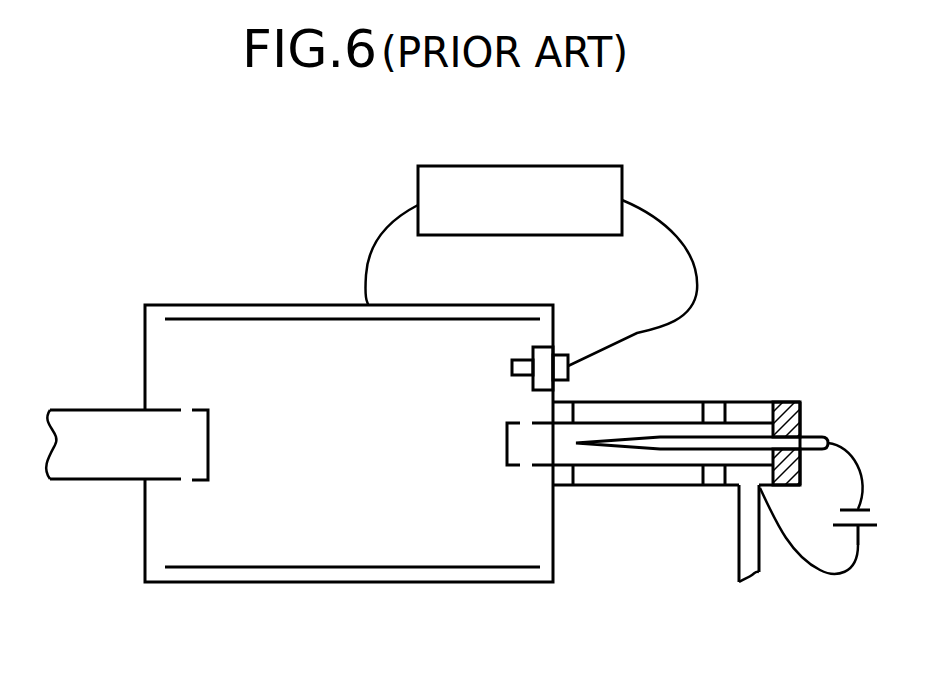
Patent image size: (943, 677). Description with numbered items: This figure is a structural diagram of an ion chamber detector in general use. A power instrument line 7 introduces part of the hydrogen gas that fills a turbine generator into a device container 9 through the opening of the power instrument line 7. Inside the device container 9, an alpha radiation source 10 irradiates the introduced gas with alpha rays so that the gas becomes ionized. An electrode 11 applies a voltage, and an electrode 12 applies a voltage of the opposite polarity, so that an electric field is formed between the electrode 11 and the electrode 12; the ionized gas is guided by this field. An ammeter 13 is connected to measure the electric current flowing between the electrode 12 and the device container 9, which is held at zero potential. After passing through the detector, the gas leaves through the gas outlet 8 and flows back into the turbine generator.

The power instrument line 7 is at (58, 440).
The gas outlet 8 is at (760, 576).
The device container 9 is at (305, 305).
The alpha radiation source 10 is at (218, 320).
The electrode 11 is at (827, 433).
The electrode 12 is at (655, 402).
The ammeter 13 is at (623, 174).